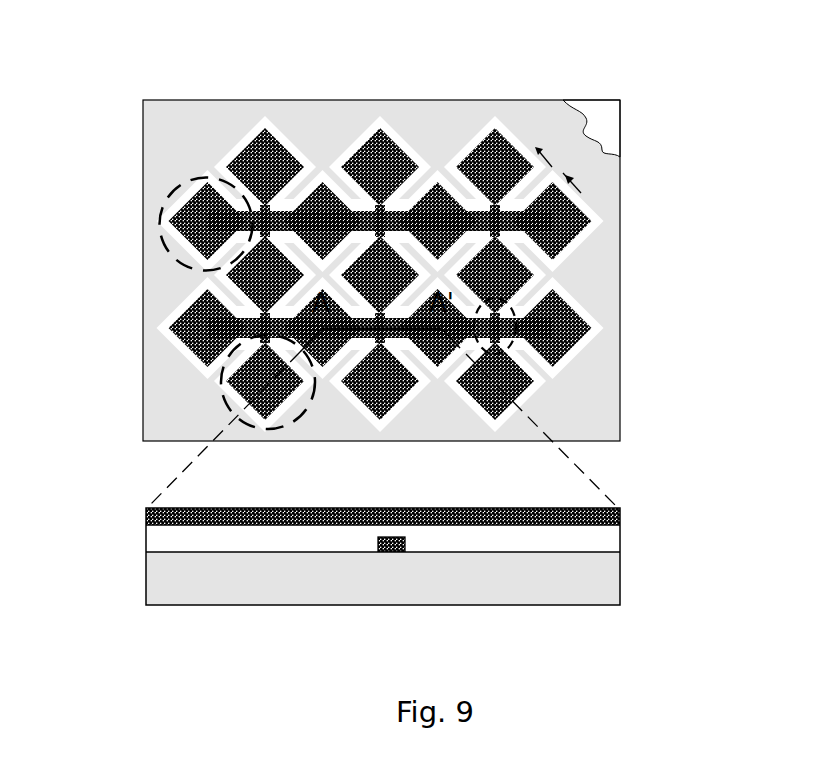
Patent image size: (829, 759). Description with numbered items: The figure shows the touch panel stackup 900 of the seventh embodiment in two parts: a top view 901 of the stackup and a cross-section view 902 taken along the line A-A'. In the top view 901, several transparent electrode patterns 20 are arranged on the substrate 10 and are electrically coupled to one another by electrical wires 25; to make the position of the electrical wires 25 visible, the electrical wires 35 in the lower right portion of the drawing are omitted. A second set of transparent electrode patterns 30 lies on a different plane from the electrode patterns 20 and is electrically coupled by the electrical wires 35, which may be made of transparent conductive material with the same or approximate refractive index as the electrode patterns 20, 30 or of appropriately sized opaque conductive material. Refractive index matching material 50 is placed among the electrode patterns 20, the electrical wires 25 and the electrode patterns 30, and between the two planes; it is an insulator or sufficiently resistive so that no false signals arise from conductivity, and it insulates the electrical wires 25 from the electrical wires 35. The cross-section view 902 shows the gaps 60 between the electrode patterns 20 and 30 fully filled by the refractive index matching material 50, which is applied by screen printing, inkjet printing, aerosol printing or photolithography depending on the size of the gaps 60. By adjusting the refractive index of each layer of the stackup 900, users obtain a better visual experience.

The touch panel stackup 900 is at (380, 44).
The substrate 10 is at (608, 113).
The electrode patterns 20 is at (237, 354).
The electrical wires 25 is at (483, 296).
The electrode patterns 30 is at (173, 198).
The electrical wires 35 is at (517, 223).
The refractive index matching material 50 is at (227, 138).
The gaps 60 is at (600, 167).
The top view 901 is at (437, 270).
The cross-section view 902 is at (434, 543).